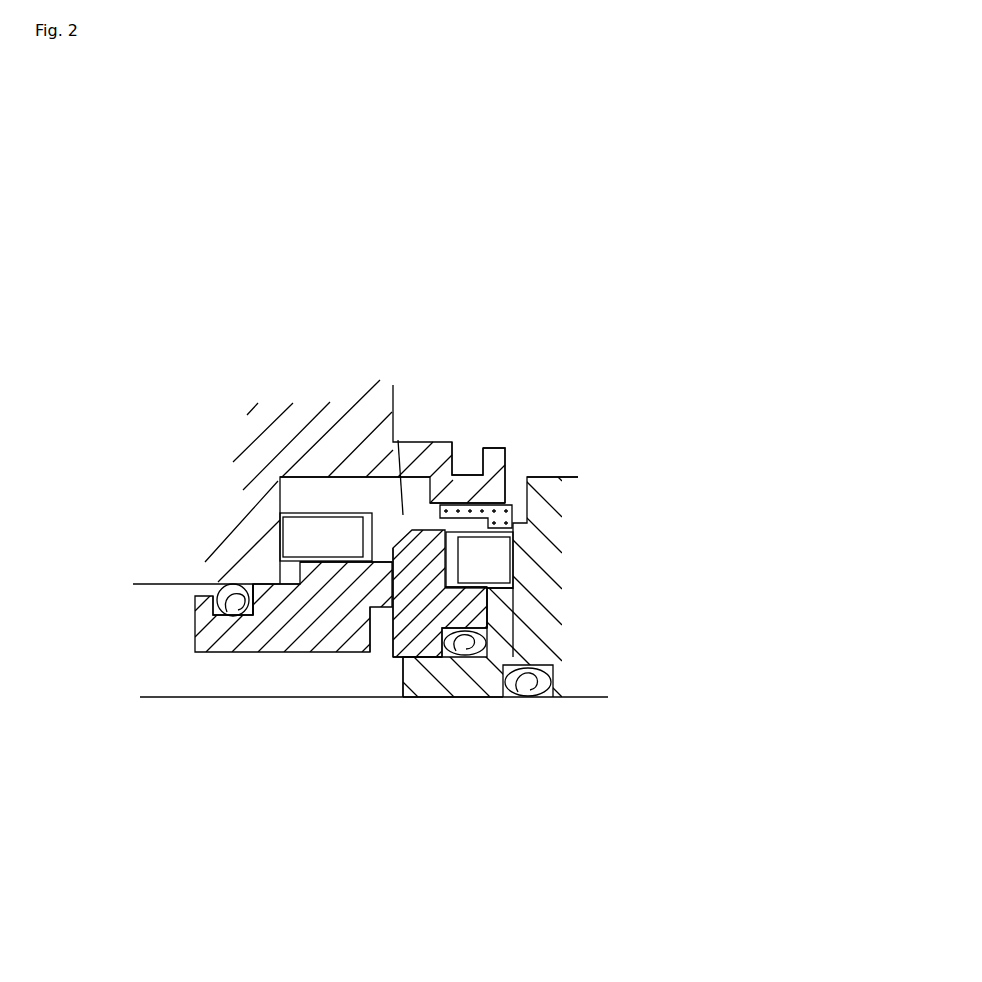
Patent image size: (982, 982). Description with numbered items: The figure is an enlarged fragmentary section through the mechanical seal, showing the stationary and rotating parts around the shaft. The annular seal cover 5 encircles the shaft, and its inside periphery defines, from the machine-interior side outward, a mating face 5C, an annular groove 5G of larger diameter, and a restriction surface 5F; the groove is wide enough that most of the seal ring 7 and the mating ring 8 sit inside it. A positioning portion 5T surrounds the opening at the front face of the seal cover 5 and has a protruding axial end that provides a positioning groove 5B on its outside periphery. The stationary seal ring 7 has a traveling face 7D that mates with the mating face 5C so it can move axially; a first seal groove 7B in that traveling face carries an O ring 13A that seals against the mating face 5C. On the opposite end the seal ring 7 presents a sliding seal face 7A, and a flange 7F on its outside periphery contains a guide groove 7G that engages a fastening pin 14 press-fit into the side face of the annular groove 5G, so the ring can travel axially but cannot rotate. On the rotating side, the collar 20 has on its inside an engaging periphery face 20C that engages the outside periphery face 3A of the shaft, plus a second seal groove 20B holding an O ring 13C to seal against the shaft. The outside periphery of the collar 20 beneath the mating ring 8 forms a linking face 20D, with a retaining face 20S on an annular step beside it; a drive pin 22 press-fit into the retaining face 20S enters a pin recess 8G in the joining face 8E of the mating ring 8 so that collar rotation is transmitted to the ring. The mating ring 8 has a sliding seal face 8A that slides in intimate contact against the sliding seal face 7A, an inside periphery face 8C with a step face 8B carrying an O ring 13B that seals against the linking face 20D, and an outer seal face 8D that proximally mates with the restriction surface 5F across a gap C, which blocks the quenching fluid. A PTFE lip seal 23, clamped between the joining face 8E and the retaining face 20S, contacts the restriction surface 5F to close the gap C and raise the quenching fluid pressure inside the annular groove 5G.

The outside periphery face 3A is at (343, 693).
The seal cover 5 is at (313, 402).
The positioning groove 5B is at (450, 522).
The mating face 5C is at (183, 587).
The restriction surface 5F is at (462, 460).
The annular groove 5G is at (361, 479).
The positioning portion 5T is at (493, 482).
The seal ring 7 is at (313, 652).
The sliding seal face 7A is at (296, 640).
The first seal groove 7B is at (233, 597).
The traveling face 7D is at (252, 596).
The flange 7F is at (272, 643).
The guide groove 7G is at (323, 648).
The mating ring 8 is at (383, 640).
The sliding seal face 8A is at (378, 625).
The step face 8B is at (490, 652).
The inside periphery face 8C is at (478, 682).
The seal face 8D is at (497, 563).
The joining face 8E is at (490, 602).
The pin recess 8G is at (498, 510).
The O ring 13A is at (205, 585).
The O ring 13B is at (480, 638).
The O ring 13C is at (552, 685).
The fastening pin 14 is at (335, 523).
The collar 20 is at (562, 533).
The second seal groove 20B is at (528, 690).
The engaging periphery face 20C is at (458, 685).
The linking face 20D is at (412, 697).
The retaining face 20S is at (515, 597).
The drive pin 22 is at (505, 555).
The lip seal 23 is at (532, 476).
The gap C is at (403, 515).